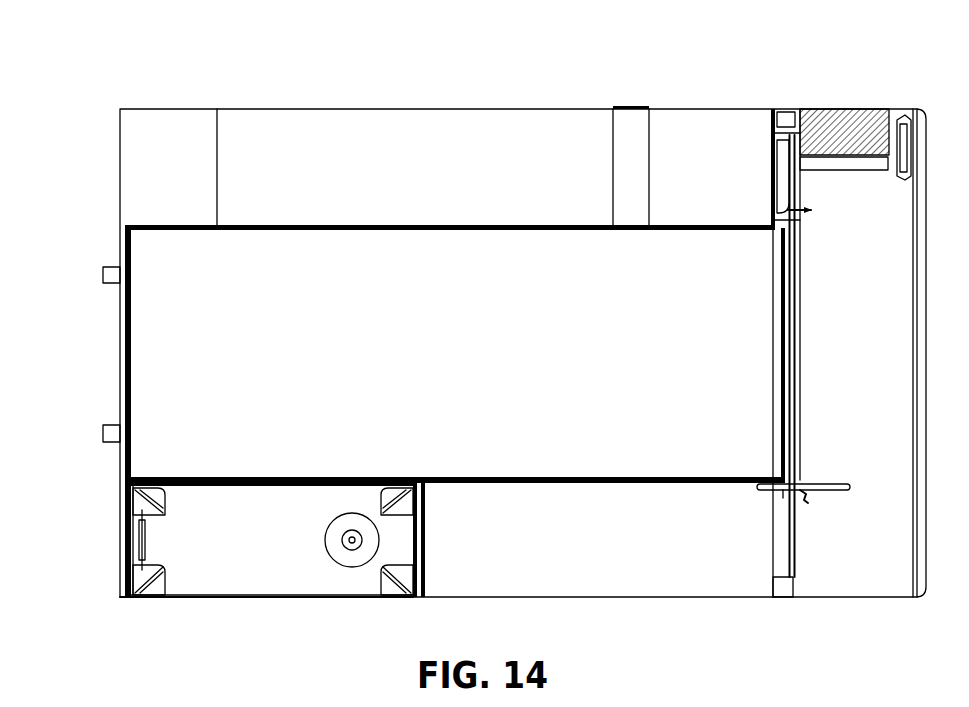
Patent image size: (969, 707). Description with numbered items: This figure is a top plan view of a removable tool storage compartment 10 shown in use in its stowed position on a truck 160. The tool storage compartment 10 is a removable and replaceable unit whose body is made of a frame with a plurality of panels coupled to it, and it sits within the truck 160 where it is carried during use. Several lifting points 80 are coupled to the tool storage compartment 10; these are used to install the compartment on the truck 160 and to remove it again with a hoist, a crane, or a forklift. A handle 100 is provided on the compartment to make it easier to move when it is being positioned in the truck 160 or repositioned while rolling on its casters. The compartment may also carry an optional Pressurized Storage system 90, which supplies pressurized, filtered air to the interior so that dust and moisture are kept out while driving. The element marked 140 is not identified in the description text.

The truck 160 is at (290, 80).
The tray 140 is at (243, 602).
The tool storage compartment 10 is at (192, 598).
The handle 100 is at (118, 545).
The lifting points 80 is at (133, 594).
The Pressurized Storage system (PSS) 90 is at (323, 580).